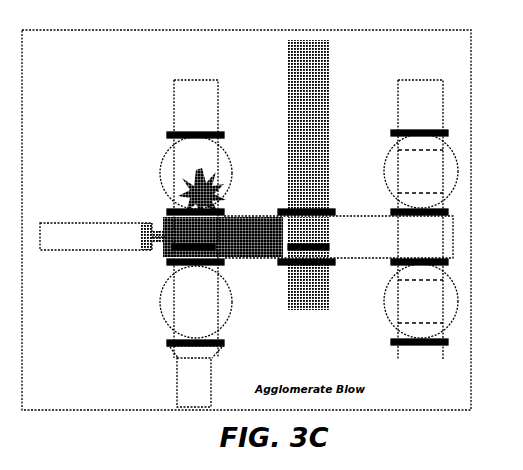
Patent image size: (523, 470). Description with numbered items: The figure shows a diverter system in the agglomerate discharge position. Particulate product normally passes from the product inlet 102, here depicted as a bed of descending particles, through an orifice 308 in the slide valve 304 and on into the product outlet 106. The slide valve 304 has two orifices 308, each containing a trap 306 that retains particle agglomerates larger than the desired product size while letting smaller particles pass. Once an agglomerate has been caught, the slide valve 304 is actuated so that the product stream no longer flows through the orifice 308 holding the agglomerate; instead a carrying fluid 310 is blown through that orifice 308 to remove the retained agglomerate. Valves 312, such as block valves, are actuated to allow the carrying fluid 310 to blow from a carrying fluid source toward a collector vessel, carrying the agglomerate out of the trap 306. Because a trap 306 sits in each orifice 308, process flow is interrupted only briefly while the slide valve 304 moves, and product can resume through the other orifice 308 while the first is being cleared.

The product inlet 102 is at (327, 53).
The product outlet 106 is at (300, 287).
The slide valve 304 is at (163, 205).
The trap 306 is at (176, 249).
The orifices 308 is at (303, 230).
The carrying fluid 310 is at (208, 379).
The valves 312 is at (163, 157).